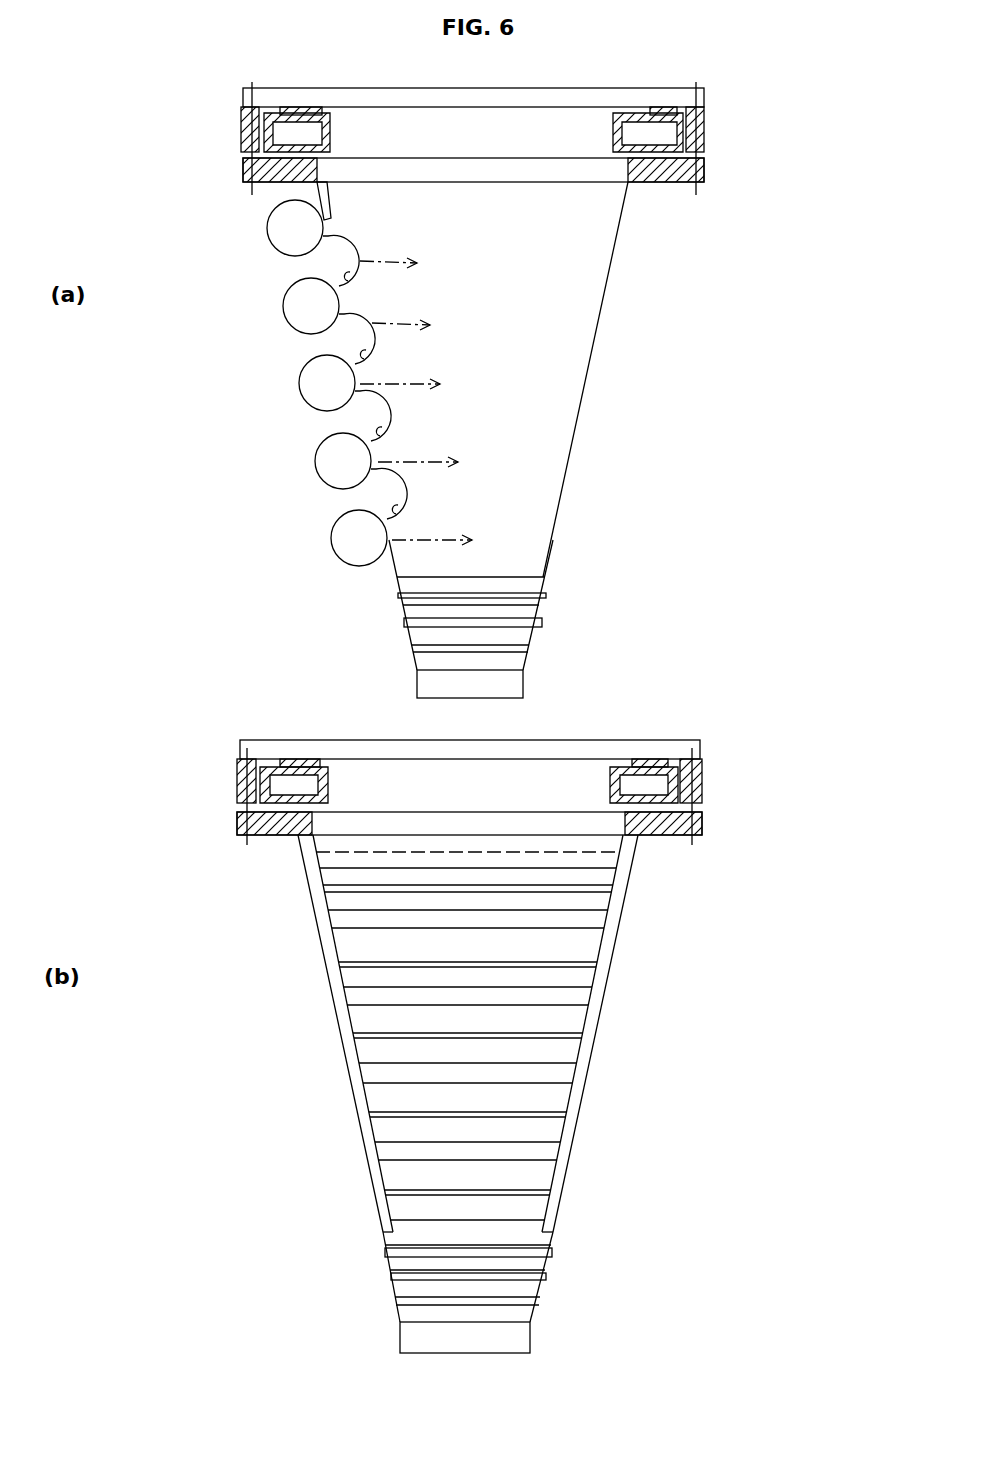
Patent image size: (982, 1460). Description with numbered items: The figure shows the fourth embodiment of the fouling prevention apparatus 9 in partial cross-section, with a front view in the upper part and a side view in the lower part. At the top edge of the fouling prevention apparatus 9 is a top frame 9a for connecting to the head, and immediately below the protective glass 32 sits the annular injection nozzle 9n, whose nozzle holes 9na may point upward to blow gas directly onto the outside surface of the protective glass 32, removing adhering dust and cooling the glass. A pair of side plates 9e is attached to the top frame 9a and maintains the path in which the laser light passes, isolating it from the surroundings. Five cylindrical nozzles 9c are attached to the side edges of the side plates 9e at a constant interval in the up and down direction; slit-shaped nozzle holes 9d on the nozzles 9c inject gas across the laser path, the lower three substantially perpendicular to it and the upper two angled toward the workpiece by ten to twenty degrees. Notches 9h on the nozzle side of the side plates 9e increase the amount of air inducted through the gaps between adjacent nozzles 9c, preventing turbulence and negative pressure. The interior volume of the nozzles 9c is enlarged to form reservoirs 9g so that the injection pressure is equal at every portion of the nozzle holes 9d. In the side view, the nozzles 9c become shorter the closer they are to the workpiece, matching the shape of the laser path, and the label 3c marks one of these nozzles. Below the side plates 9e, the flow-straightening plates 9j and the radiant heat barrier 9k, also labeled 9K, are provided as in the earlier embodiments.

The protective glass 32 is at (555, 93).
The injection nozzle 9n is at (330, 131).
The nozzle holes 9na is at (300, 118).
The top frame 9a is at (705, 182).
The side plates 9e is at (583, 401).
The nozzle holes 9d is at (300, 236).
The notches 9h is at (355, 284).
The nozzles 9c is at (297, 248).
The partition 3c is at (335, 910).
The reservoirs 9g is at (297, 296).
The flow-straightening plates 9j is at (525, 648).
The radiant heat barrier 9k is at (518, 690).
The radiant heat barrier 9K is at (528, 1340).
The fouling prevention apparatus 9 is at (667, 303).